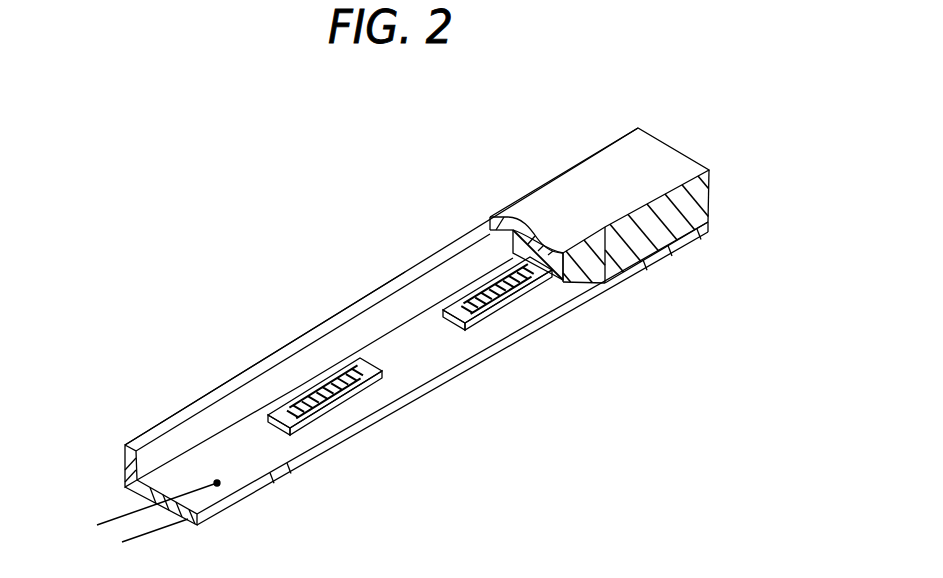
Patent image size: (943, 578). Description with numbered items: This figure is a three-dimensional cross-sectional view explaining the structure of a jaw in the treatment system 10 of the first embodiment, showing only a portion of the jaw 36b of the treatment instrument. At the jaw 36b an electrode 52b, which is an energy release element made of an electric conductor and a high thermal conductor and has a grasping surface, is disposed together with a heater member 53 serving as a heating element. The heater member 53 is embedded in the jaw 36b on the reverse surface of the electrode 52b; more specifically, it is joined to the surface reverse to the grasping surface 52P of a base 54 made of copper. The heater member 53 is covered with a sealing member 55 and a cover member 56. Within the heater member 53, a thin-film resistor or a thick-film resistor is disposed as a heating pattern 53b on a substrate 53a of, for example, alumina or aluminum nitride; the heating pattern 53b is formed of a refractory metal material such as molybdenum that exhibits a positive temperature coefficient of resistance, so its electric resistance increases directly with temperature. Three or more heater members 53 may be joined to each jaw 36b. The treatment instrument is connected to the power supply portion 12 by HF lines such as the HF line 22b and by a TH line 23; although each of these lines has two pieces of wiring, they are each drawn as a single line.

The sensor unit 10 is at (434, 326).
The power supply portion 12 is at (434, 326).
The jaw 36b is at (265, 327).
The electrode 52b is at (405, 272).
The grasping surface 52P is at (452, 376).
The heater member 53 is at (454, 390).
The substrate 53a is at (488, 328).
The heating pattern 53b is at (553, 283).
The base 54 is at (666, 258).
The sealing member 55 is at (585, 300).
The cover member 56 is at (712, 182).
The TH line 23 is at (105, 521).
The HF line 22b is at (141, 534).